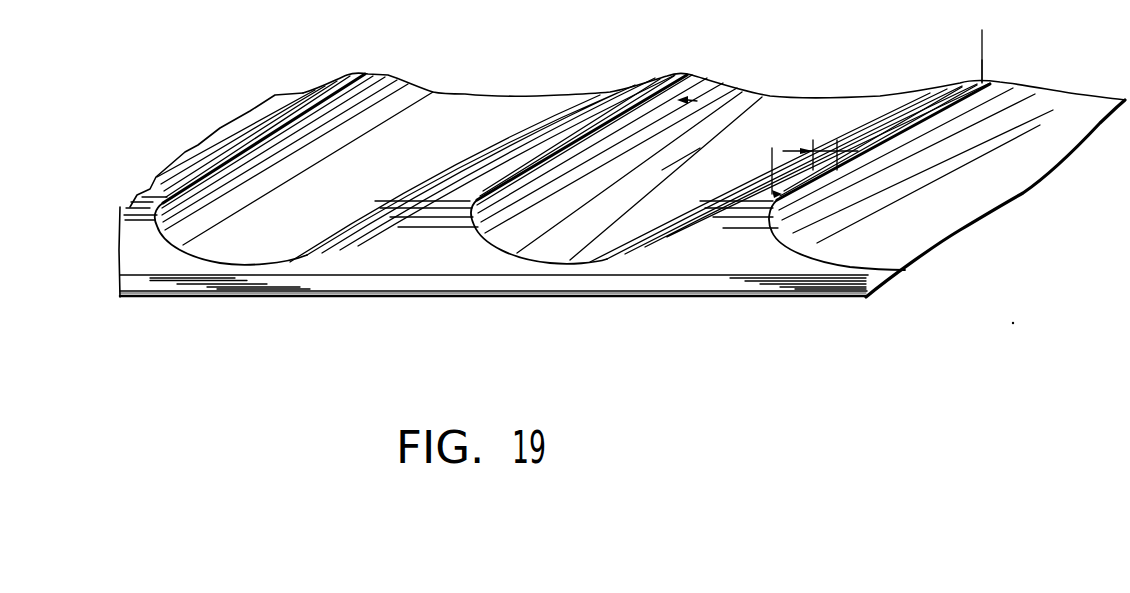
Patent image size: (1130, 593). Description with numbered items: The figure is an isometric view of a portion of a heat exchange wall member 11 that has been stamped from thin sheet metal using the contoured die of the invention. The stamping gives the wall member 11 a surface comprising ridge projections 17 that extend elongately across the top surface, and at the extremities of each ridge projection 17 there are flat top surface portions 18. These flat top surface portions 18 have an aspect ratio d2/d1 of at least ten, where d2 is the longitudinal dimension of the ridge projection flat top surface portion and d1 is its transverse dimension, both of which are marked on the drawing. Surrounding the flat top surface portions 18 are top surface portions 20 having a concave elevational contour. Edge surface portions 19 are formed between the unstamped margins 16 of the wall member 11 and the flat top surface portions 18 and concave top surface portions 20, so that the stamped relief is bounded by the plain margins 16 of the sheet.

The wall member 11 is at (1025, 192).
The unstamped margins 16 is at (371, 283).
The ridge projections 17 is at (717, 81).
The flat top surface portions 18 is at (627, 94).
The edge surface portions 19 is at (733, 253).
The top surface portions having a concave elevational contour 20 is at (583, 240).
The transverse dimension of the ridge projection flat top surface portion d1 is at (836, 151).
The longitudinal dimension of the ridge projection flat top surface portion d2 is at (897, 128).